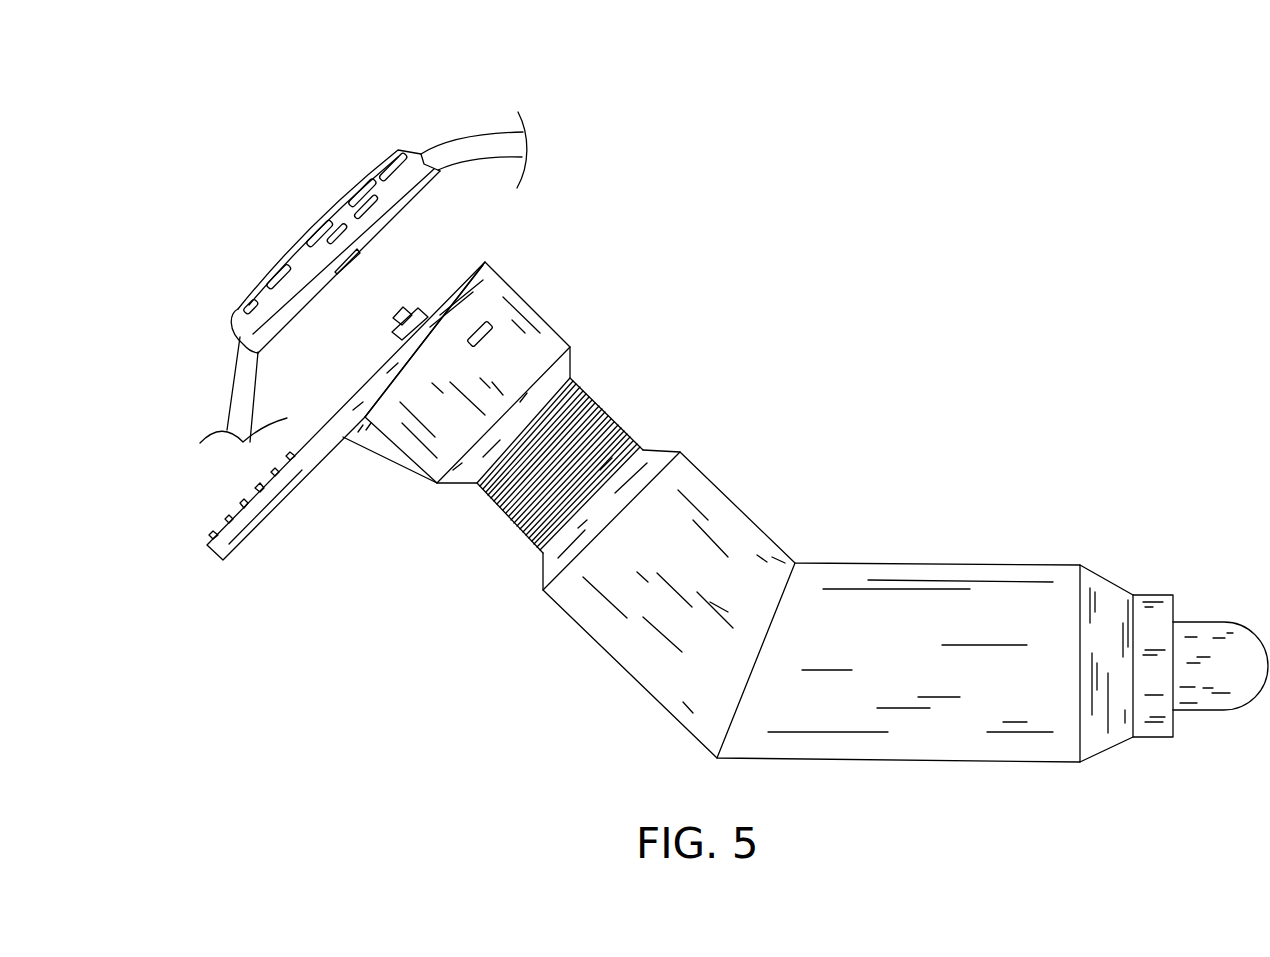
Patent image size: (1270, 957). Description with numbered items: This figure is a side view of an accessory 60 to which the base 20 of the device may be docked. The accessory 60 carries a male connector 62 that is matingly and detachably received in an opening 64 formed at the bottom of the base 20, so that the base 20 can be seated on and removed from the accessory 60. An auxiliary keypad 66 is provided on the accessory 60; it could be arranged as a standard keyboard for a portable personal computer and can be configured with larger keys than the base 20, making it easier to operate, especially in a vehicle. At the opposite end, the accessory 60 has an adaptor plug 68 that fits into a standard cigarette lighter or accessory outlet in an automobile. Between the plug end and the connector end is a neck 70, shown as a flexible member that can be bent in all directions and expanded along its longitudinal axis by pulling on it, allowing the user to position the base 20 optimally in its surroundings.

The base 20 is at (363, 115).
The accessory 60 is at (905, 556).
The male connector 62 is at (417, 306).
The opening 64 is at (355, 252).
The auxiliary keypad 66 is at (216, 500).
The adaptor plug 68 is at (1163, 553).
The neck 70 is at (632, 388).